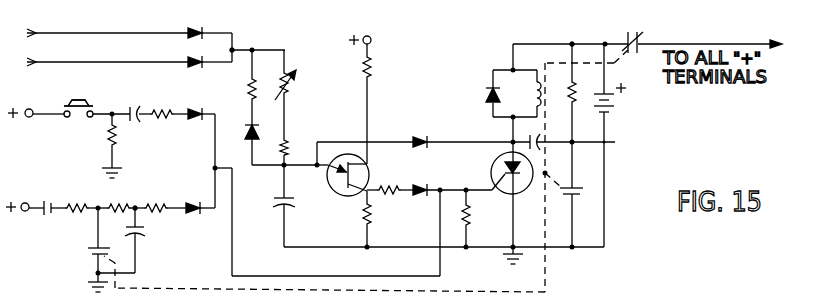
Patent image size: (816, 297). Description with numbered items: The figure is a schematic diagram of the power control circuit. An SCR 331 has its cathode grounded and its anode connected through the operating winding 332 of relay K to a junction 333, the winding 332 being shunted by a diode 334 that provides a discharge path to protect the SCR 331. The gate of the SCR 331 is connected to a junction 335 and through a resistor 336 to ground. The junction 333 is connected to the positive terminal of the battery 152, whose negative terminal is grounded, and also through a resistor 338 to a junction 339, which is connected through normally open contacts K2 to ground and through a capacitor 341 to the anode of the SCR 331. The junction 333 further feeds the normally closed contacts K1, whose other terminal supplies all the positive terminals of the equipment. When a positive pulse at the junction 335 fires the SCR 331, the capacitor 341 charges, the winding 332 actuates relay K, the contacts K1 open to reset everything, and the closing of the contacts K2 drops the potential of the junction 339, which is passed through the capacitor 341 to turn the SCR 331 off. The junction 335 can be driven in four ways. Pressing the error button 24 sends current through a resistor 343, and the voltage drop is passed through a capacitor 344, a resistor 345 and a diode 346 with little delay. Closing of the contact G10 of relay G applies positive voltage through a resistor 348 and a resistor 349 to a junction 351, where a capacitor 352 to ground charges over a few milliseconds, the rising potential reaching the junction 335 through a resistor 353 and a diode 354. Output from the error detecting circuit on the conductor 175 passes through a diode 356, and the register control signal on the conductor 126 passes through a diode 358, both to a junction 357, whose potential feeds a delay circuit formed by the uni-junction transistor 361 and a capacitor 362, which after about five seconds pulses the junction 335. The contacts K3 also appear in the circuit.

The conductor 175 is at (88, 33).
The conductor 126 is at (88, 62).
The diode 356 is at (190, 33).
The diode 358 is at (190, 62).
The junction 357 is at (233, 49).
The error button 24 is at (69, 102).
The capacitor 344 is at (137, 107).
The resistor 345 is at (167, 128).
The diode 346 is at (191, 110).
The resistor 343 is at (94, 136).
The contact of relay G G10 is at (51, 195).
The resistor 348 is at (71, 222).
The resistor 349 is at (111, 198).
The junction 351 is at (137, 206).
The resistor 353 is at (160, 214).
The diode 354 is at (192, 205).
The capacitor 352 is at (139, 232).
The contact K3 is at (90, 249).
The capacitor 362 is at (293, 203).
The uni-junction transistor 361 is at (366, 169).
The junction 335 is at (438, 187).
The SCR 331 is at (495, 170).
The resistor 336 is at (469, 218).
The junction 333 is at (573, 43).
The operating winding 332 is at (536, 93).
The diode 334 is at (490, 88).
The capacitor 341 is at (507, 133).
The resistor 338 is at (580, 92).
The battery 152 is at (615, 103).
The junction 339 is at (628, 142).
The normally open contacts K2 is at (604, 189).
The normally closed contacts K1 is at (631, 32).